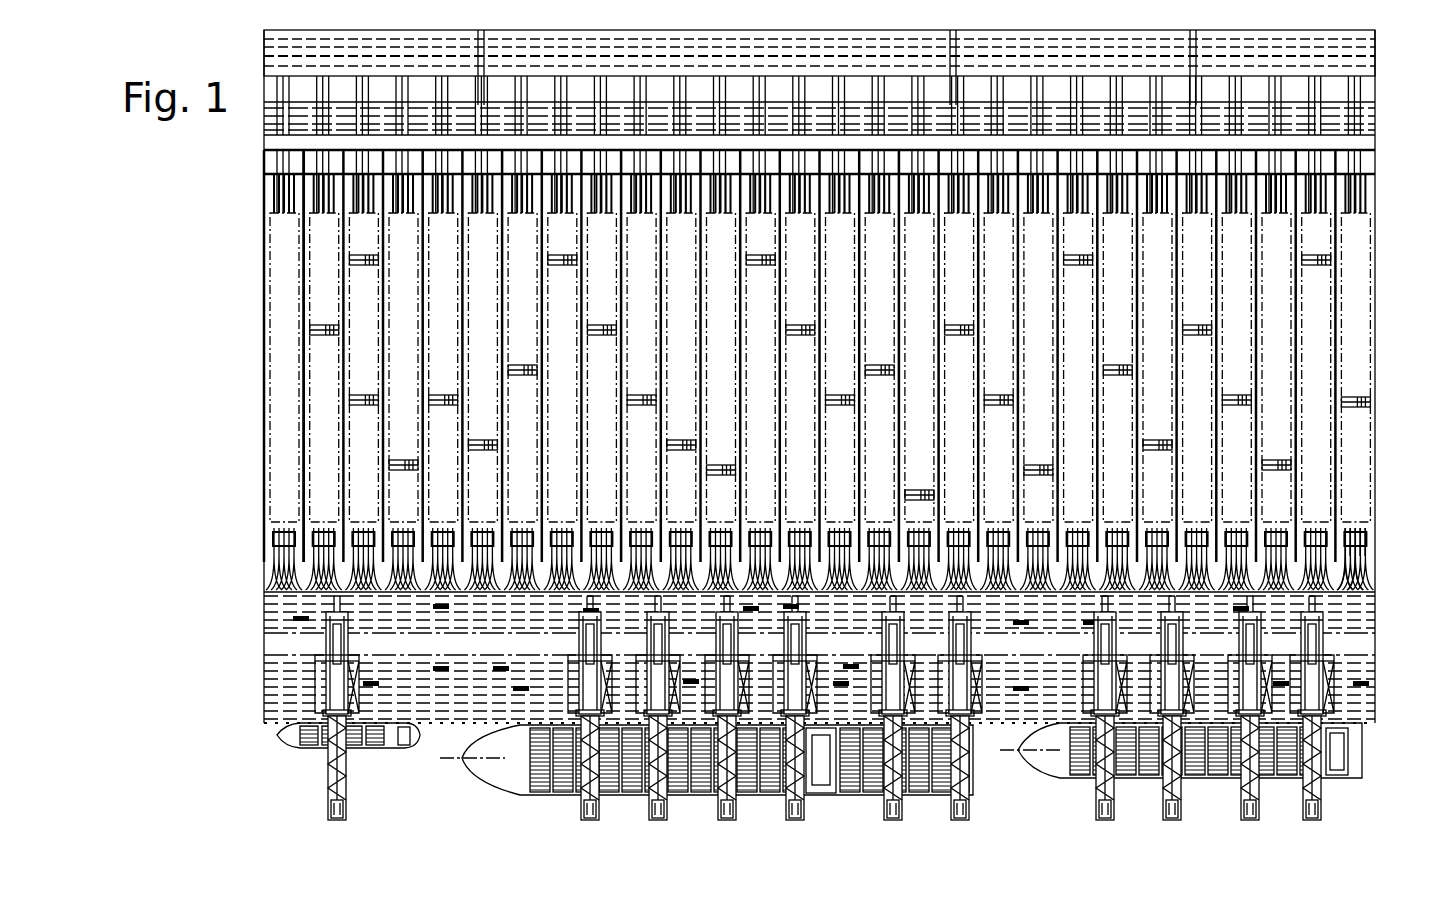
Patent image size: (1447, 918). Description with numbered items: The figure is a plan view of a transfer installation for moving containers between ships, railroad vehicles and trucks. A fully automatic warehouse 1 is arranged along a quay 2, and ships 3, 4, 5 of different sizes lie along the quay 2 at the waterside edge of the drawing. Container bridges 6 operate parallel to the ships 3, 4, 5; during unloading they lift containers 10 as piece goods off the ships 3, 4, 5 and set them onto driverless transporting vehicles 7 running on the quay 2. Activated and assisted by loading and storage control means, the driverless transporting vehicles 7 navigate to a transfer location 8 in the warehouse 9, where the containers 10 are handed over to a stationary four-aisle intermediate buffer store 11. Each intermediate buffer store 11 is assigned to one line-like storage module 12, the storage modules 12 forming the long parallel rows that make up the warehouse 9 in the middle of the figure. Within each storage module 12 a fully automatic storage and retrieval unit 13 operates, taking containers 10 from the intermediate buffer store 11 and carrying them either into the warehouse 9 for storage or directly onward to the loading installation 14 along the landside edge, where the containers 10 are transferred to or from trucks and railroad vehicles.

The fully automatic warehouse 1 is at (817, 376).
The quay 2 is at (280, 640).
The ship 3 is at (527, 792).
The ship 4 is at (1043, 770).
The ship 5 is at (388, 735).
The container bridge 6 is at (343, 818).
The driverless transporting vehicle 7 is at (1370, 685).
The transfer location 8 is at (1355, 562).
The warehouse 9 is at (1352, 467).
The container 10 is at (300, 546).
The four-aisle intermediate buffer store 11 is at (1366, 543).
The line-like storage module 12 is at (297, 520).
The fully automatic storage and retrieval unit 13 is at (1369, 402).
The loading installation 14 is at (1381, 167).